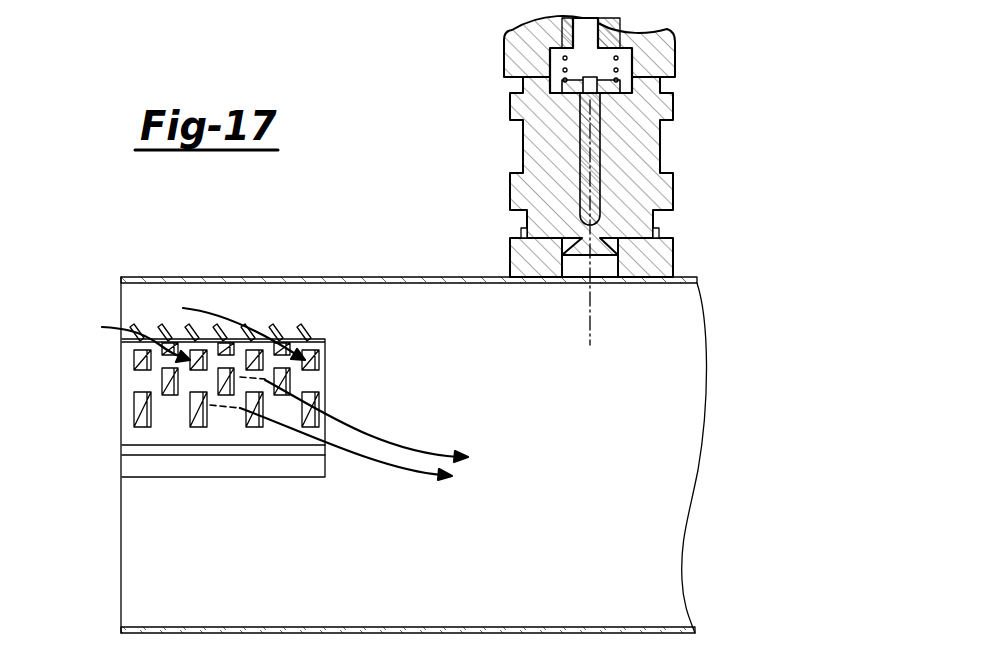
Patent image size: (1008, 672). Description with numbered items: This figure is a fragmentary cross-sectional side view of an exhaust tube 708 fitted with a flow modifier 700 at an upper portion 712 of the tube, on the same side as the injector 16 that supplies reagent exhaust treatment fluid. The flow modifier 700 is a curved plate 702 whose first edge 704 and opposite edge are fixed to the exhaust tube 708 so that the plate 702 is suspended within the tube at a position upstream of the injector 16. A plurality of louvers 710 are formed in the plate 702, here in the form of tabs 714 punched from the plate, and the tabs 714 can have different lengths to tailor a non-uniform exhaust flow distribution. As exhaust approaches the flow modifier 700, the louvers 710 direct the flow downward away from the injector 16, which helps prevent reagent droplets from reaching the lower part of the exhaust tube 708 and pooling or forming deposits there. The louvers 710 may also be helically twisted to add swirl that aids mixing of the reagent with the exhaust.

The injector 16 is at (524, 143).
The flow modifier 700 is at (157, 494).
The curved plate 702 is at (312, 379).
The first edge 704 is at (230, 478).
The exhaust tube 708 is at (390, 278).
The louvers 710 is at (303, 328).
The upper portion 712 is at (135, 284).
The tabs 714 is at (138, 333).